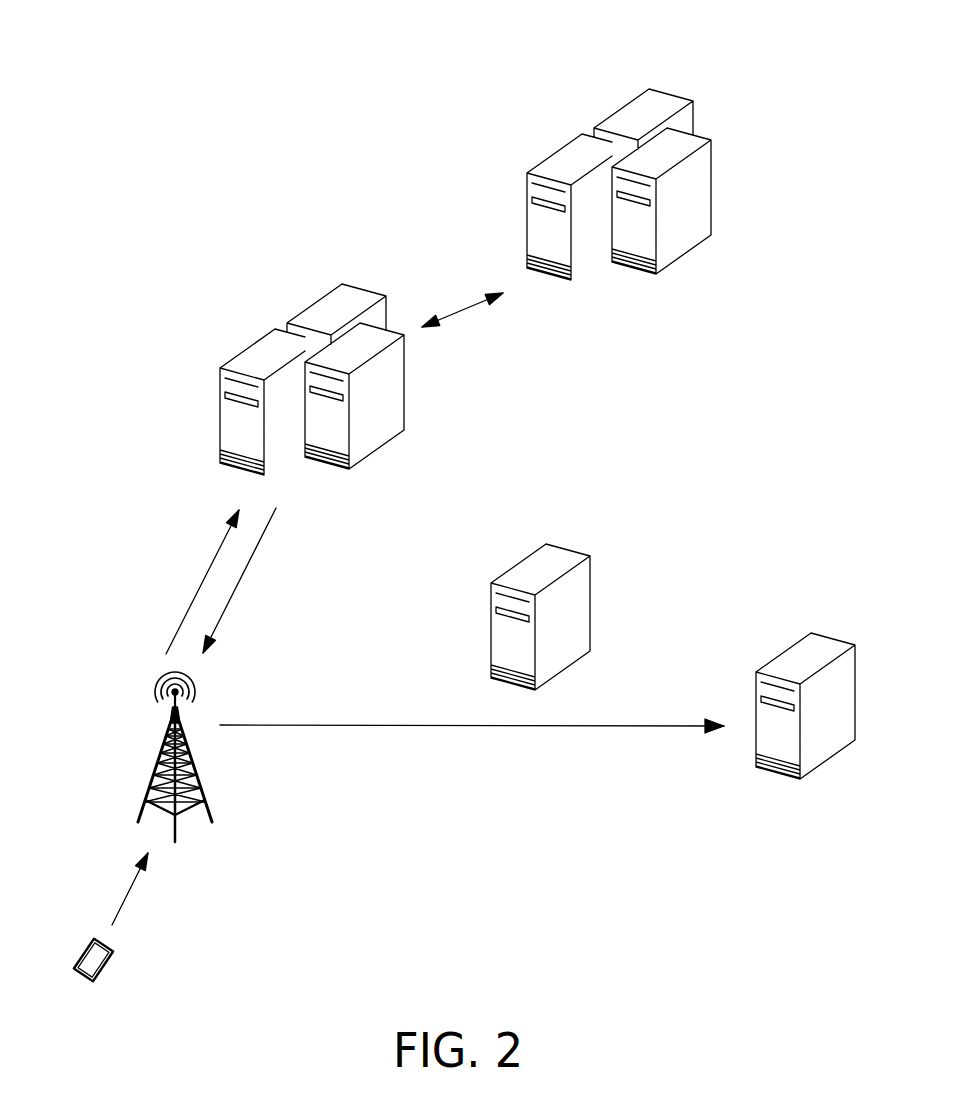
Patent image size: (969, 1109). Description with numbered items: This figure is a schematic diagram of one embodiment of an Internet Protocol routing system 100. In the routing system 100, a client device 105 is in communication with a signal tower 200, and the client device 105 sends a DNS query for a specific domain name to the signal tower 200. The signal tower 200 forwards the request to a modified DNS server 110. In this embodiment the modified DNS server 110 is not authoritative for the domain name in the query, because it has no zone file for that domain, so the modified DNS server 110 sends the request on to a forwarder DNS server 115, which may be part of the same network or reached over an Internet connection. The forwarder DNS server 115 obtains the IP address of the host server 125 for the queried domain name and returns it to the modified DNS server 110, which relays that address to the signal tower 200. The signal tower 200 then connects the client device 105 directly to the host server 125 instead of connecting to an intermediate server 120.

The Internet Protocol (IP) routing system 100 is at (338, 110).
The client device 105 is at (108, 958).
The modified DNS server 110 is at (220, 420).
The forwarder DNS server 115 is at (527, 237).
The intermediate server 120 is at (491, 643).
The host server 125 is at (756, 760).
The signal tower 200 is at (212, 817).